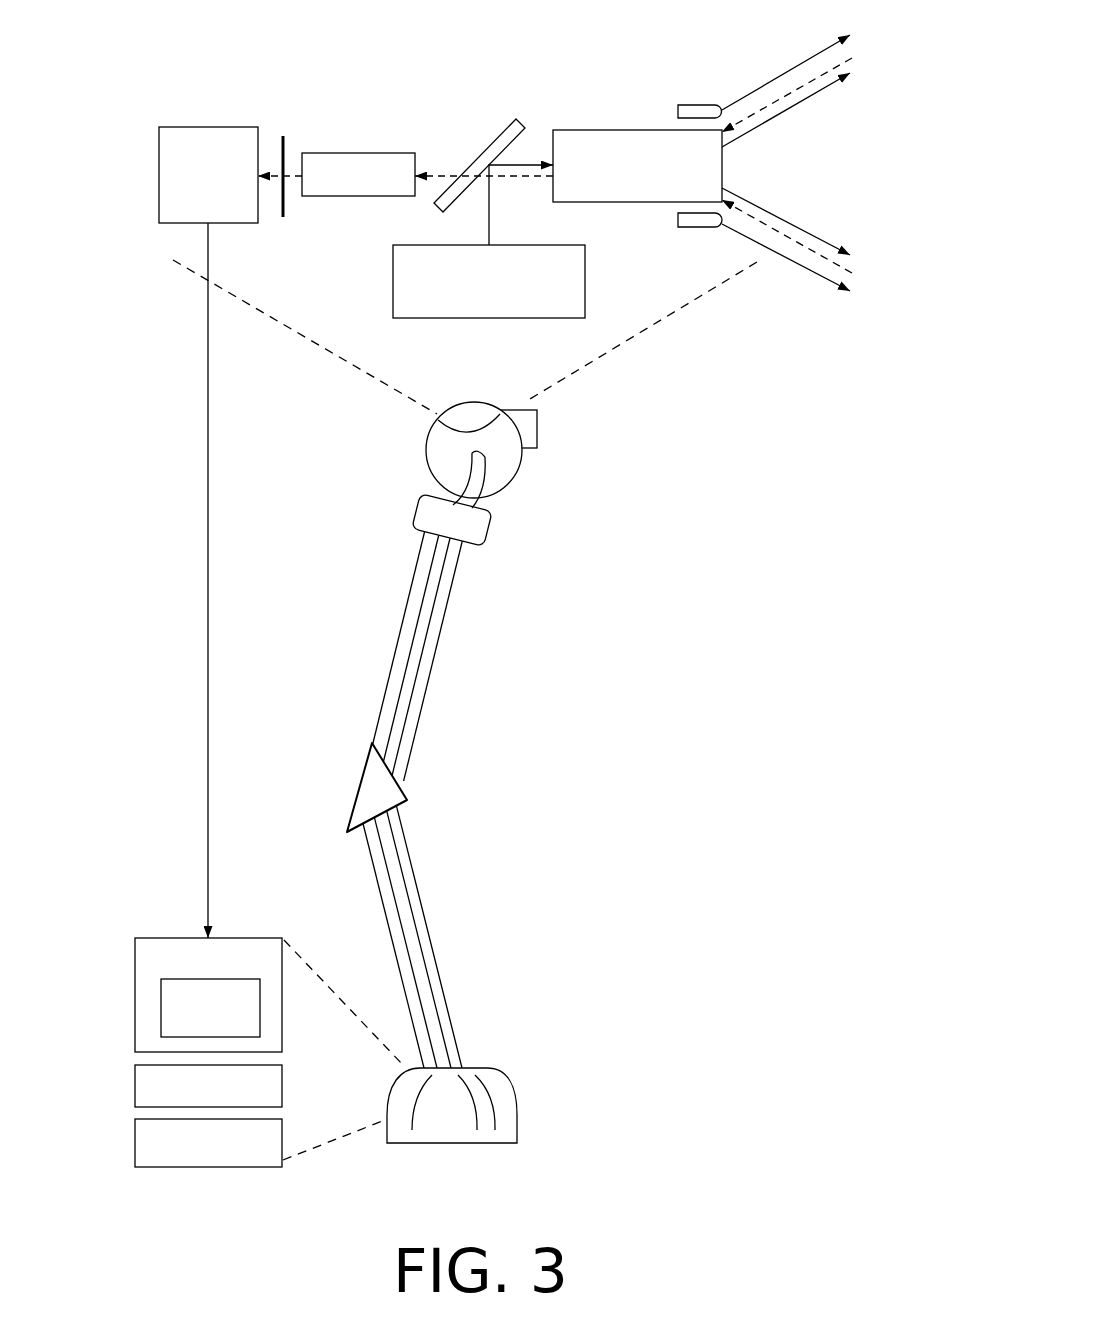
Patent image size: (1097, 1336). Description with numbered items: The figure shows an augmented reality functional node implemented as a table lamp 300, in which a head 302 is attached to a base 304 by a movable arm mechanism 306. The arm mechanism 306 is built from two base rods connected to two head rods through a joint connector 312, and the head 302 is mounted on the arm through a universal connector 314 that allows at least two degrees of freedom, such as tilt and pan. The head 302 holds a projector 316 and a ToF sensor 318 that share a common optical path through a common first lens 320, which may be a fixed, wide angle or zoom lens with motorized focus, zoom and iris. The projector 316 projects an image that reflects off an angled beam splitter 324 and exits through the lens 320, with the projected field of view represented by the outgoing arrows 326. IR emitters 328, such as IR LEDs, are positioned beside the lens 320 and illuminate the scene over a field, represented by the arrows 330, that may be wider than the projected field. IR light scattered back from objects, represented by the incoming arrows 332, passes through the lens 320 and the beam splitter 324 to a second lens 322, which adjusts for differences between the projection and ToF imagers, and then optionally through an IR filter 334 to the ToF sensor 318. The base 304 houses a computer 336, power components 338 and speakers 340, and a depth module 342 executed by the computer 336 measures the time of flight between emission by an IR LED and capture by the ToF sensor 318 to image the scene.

The table lamp 300 is at (678, 652).
The head 302 is at (515, 483).
The base 304 is at (518, 1108).
The arm mechanism 306 is at (343, 768).
The joint connector 312 is at (385, 797).
The universal connector 314 is at (455, 502).
The projector 316 is at (489, 281).
The ToF sensor 318 is at (208, 175).
The first lens 320 is at (637, 166).
The second lens 322 is at (358, 174).
The beam splitter 324 is at (510, 123).
The outgoing pair of arrows 326 is at (775, 116).
The IR emitters 328 is at (685, 275).
The outgoing pair of arrows 330 is at (803, 62).
The incoming pair of arrows 332 is at (777, 101).
The IR filter 334 is at (283, 217).
The computer 336 is at (135, 962).
The power components 338 is at (135, 1085).
The speakers 340 is at (135, 1136).
The depth module 342 is at (161, 1008).